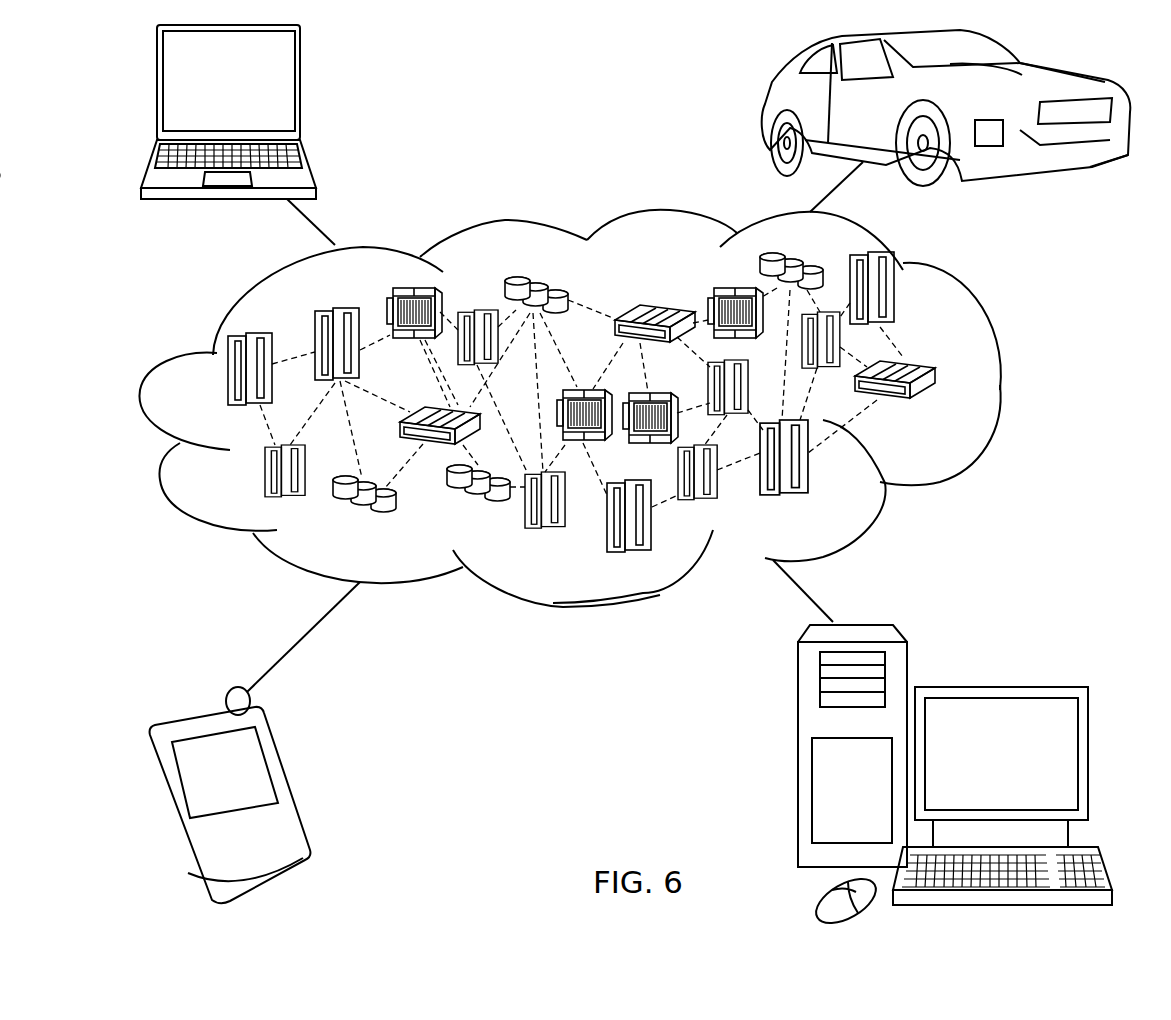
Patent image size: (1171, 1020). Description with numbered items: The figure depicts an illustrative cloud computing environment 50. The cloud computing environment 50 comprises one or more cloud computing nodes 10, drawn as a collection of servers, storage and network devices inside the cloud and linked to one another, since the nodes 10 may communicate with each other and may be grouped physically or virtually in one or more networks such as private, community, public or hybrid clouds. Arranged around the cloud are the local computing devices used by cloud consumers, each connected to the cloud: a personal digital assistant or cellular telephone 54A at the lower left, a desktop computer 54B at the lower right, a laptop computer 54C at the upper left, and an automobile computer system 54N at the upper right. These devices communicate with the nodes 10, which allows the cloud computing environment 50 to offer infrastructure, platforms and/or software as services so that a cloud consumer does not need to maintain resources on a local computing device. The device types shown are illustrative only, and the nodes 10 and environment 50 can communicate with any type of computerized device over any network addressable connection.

The laptop computer 54C is at (302, 91).
The automobile computer system 54N is at (762, 107).
The personal digital assistant or cellular telephone 54A is at (290, 786).
The desktop computer 54B is at (997, 687).
The cloud computing environment 50 is at (1000, 380).
The cloud computing node 10 is at (945, 414).